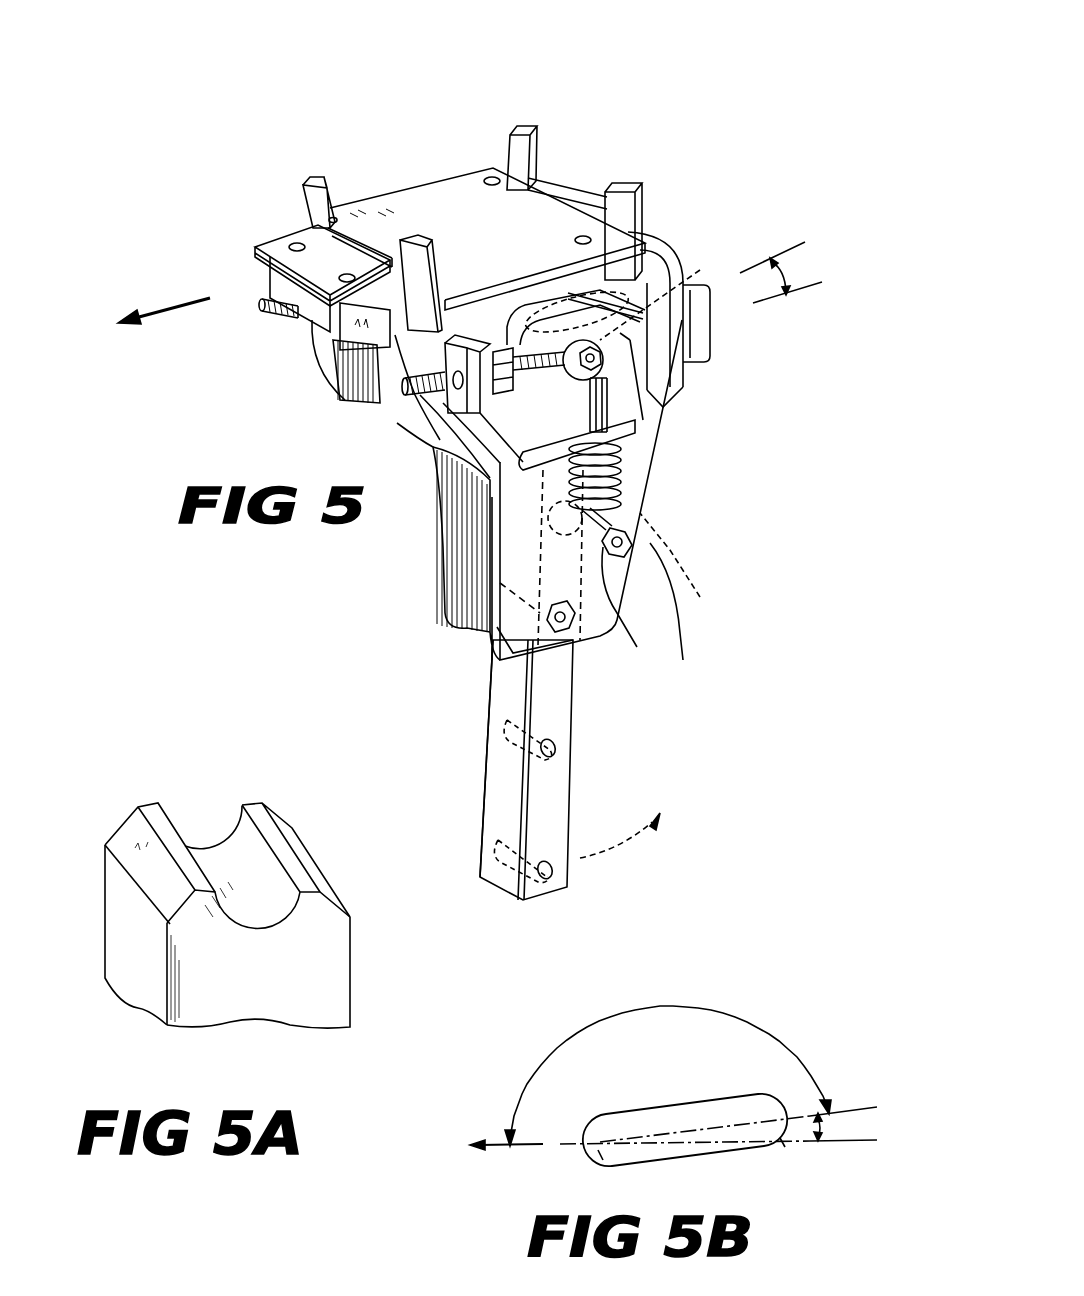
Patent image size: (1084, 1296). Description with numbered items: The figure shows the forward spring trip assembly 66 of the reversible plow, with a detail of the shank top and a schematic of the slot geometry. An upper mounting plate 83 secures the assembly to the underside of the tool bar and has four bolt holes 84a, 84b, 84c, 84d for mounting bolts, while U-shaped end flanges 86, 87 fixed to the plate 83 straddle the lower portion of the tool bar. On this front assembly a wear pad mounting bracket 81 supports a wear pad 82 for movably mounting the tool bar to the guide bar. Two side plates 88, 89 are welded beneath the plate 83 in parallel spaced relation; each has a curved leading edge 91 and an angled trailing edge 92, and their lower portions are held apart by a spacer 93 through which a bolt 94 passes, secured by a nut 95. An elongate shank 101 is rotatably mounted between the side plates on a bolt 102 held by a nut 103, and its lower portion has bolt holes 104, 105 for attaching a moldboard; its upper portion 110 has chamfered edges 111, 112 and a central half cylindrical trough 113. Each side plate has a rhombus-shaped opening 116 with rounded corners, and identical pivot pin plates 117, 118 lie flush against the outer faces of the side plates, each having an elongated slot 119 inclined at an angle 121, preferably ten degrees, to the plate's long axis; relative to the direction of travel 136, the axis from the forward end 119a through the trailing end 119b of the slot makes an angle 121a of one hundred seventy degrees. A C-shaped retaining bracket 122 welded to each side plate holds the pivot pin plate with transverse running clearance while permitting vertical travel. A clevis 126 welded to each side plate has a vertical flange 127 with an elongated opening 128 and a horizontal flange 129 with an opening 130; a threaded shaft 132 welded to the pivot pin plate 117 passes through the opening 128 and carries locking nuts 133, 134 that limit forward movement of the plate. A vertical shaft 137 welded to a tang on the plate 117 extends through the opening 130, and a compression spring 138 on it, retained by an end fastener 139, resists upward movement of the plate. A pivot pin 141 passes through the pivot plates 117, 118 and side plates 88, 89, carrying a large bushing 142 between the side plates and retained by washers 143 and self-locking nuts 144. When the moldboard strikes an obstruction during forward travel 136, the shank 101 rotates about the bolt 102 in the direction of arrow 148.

In FIG. 5, the forward spring trip assembly 66 is at (408, 120).
In FIG. 5, the wear pad mounting bracket 81 is at (255, 245).
In FIG. 5, the wear pad 82 is at (321, 273).
In FIG. 5, the upper mounting plate 83 is at (445, 229).
In FIG. 5, the bolt hole 84a is at (492, 178).
In FIG. 5, the bolt hole 84b is at (575, 240).
In FIG. 5, the bolt hole 84c is at (447, 276).
In FIG. 5, the bolt hole 84d is at (335, 219).
In FIG. 5, the U-shaped end flange 86 is at (520, 140).
In FIG. 5, the U-shaped end flange 87 is at (297, 208).
In FIG. 5, the side plate 88 is at (630, 475).
In FIG. 5, the side plate 89 is at (478, 628).
In FIG. 5, the leading edge 91 is at (408, 452).
In FIG. 5, the trailing edge 92 is at (667, 477).
In FIG. 5, the spacer 93 is at (693, 566).
In FIG. 5, the bolt 94 is at (665, 578).
In FIG. 5, the nut 95 is at (585, 603).
In FIG. 5, the elongate shank 101 is at (565, 725).
In FIG. 5, the bolt 102 is at (605, 655).
In FIG. 5, the nut 103 is at (517, 653).
In FIG. 5, the bolt hole 104 is at (560, 735).
In FIG. 5, the bolt hole 105 is at (548, 897).
In FIG. 5A, the upper portion of shank 110 is at (338, 1003).
In FIG. 5A, the chamfered edge 111 is at (302, 852).
In FIG. 5A, the chamfered edge 112 is at (110, 832).
In FIG. 5A, the half cylindrical trough 113 is at (255, 904).
In FIG. 5, the rhombus-shaped opening 116 is at (554, 314).
In FIG. 5, the pivot pin plate 117 is at (700, 360).
In FIG. 5, the pivot pin plate 118 is at (650, 230).
In FIG. 5, the elongated slot 119 is at (568, 284).
In FIG. 5B, the elongated slot 119 is at (615, 1118).
In FIG. 5B, the forward end of slot 119a is at (595, 1160).
In FIG. 5B, the trailing end of slot 119b is at (780, 1146).
In FIG. 5, the slot angle 121 is at (772, 277).
In FIG. 5B, the slot angle 121 is at (825, 1126).
In FIG. 5B, the slot orientation angle 121a is at (642, 1007).
In FIG. 5, the C-shaped retaining bracket 122 is at (677, 261).
In FIG. 5, the clevis 126 is at (485, 472).
In FIG. 5, the vertical flange 127 is at (435, 393).
In FIG. 5, the opening 128 is at (443, 405).
In FIG. 5, the horizontal flange 129 is at (538, 555).
In FIG. 5, the opening 130 is at (555, 477).
In FIG. 5, the threaded shaft 132 is at (497, 385).
In FIG. 5, the locking nut 133 is at (455, 451).
In FIG. 5, the locking nut 134 is at (480, 428).
In FIG. 5, the direction of travel 136 is at (173, 315).
In FIG. 5B, the direction of travel 136 is at (502, 1147).
In FIG. 5, the vertical shaft 137 is at (653, 443).
In FIG. 5, the compression spring 138 is at (628, 522).
In FIG. 5, the end fastener 139 is at (539, 557).
In FIG. 5, the pivot pin 141 is at (670, 407).
In FIG. 5, the large bushing 142 is at (698, 270).
In FIG. 5, the washer 143 is at (665, 317).
In FIG. 5, the self-locking nut 144 is at (667, 345).
In FIG. 5, the direction arrow 148 is at (643, 843).